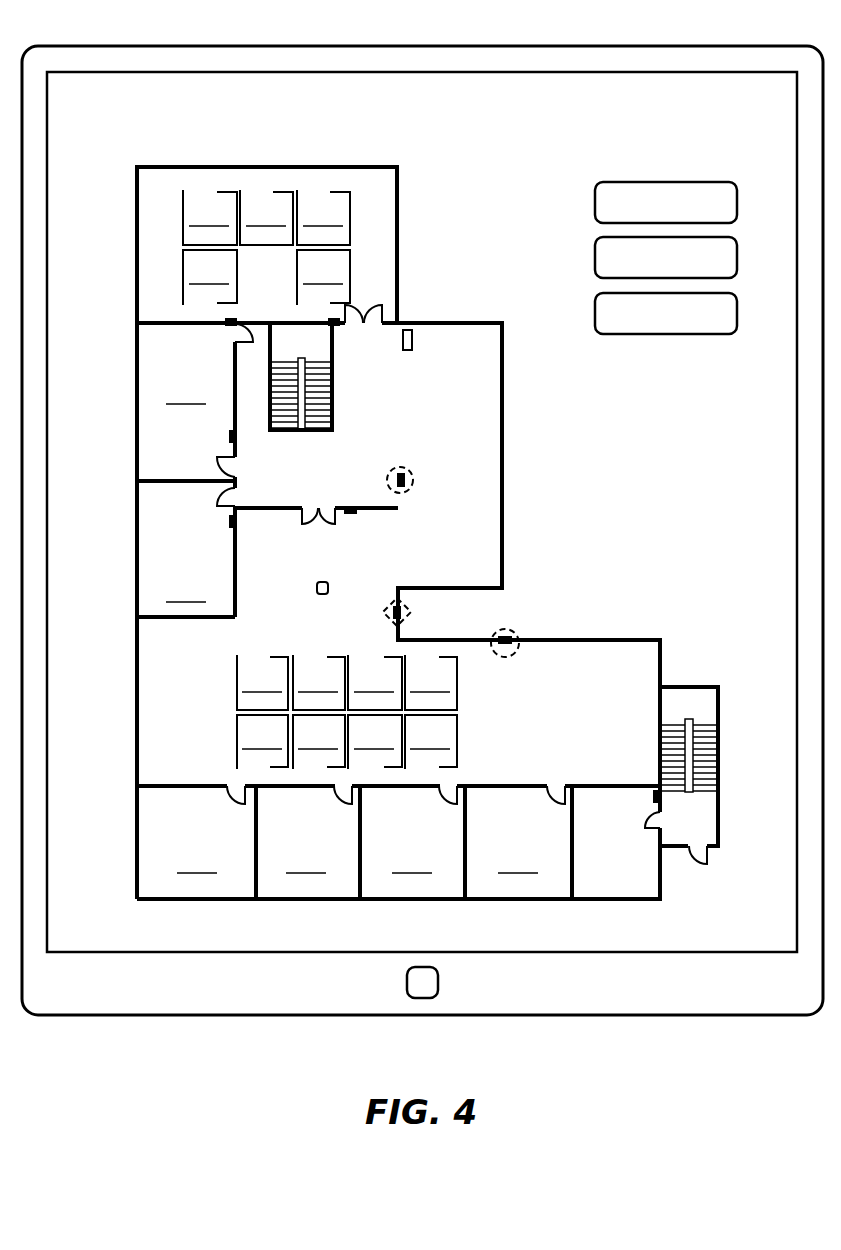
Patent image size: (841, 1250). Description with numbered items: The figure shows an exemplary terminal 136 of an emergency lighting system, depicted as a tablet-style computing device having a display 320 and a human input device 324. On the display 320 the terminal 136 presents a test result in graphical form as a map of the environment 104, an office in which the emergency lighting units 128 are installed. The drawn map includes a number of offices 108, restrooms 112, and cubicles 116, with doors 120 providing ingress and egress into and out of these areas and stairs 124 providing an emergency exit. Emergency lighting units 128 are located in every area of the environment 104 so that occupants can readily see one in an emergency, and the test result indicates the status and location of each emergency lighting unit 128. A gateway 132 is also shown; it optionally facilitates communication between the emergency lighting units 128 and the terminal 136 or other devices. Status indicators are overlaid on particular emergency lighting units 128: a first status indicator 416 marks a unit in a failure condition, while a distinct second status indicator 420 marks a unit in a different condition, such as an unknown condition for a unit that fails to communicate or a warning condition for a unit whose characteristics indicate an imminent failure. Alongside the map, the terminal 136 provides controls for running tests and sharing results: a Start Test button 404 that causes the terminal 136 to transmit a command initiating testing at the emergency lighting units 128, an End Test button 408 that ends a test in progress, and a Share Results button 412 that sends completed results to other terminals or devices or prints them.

The environment 104 is at (358, 167).
The offices 108 is at (398, 842).
The restrooms 112 is at (186, 499).
The cubicles 116 is at (320, 479).
The doors 120 is at (380, 310).
The stairs 124 is at (323, 430).
The emergency lighting units 128 is at (238, 319).
The gateway 132 is at (318, 596).
The terminal 136 is at (292, 46).
The display 320 is at (418, 72).
The human input device 324 is at (438, 983).
The Start Test button 404 is at (680, 182).
The End Test button 408 is at (595, 258).
The Share Results button 412 is at (640, 334).
The first status indicator 416 is at (383, 621).
The second status indicator 420 is at (410, 490).